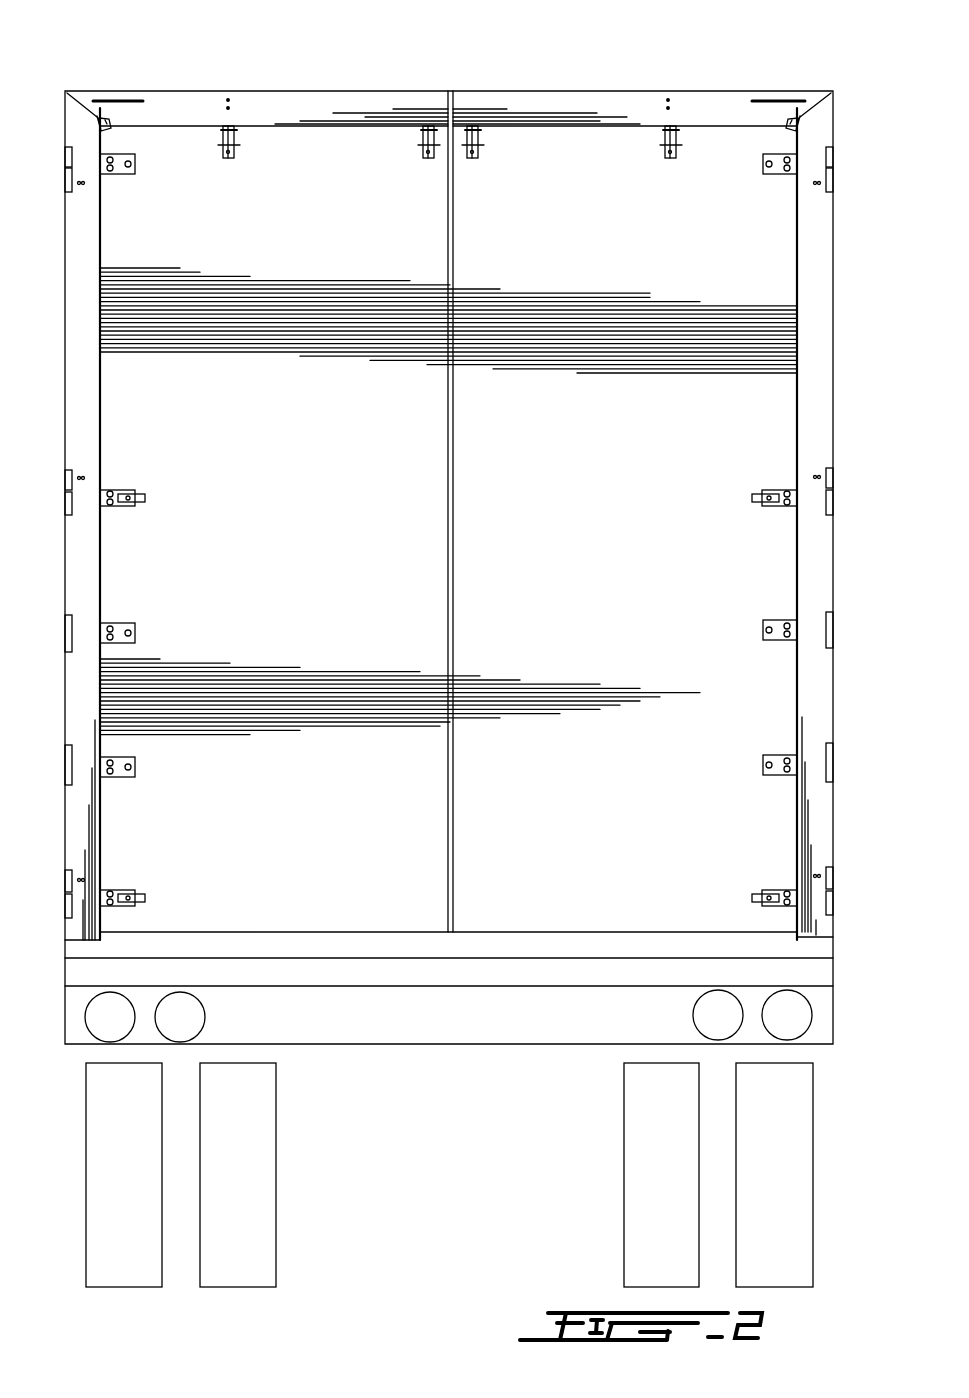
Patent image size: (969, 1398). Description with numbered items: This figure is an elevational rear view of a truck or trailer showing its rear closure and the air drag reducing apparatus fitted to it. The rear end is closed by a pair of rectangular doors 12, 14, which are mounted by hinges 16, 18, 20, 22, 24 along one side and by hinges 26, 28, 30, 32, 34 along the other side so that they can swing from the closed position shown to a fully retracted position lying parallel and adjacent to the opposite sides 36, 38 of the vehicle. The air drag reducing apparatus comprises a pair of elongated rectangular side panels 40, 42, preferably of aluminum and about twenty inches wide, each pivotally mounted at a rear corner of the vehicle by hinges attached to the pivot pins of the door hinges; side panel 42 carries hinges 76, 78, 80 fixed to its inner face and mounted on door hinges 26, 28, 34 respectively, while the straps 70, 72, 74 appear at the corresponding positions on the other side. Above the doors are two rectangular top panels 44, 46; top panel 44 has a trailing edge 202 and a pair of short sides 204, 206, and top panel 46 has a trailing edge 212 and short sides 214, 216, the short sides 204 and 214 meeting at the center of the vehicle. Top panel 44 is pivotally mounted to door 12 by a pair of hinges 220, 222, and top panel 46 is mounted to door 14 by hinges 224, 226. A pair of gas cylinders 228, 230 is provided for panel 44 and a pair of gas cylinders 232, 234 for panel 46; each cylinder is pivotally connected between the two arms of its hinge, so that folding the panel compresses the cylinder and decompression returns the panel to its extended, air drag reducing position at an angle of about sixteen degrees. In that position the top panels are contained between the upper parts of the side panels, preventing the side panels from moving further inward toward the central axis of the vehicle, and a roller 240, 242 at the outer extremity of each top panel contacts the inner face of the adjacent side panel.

The door 12 is at (182, 362).
The door 14 is at (732, 333).
The hinge 16 is at (65, 163).
The hinge 18 is at (66, 500).
The hinge 20 is at (66, 632).
The hinge 22 is at (66, 760).
The hinge 24 is at (66, 898).
The hinge 26 is at (833, 162).
The hinge 28 is at (835, 497).
The hinge 30 is at (835, 630).
The hinge 32 is at (835, 760).
The hinge 34 is at (835, 897).
The side of the vehicle 36 is at (57, 94).
The side of the vehicle 38 is at (845, 97).
The side panel 40 is at (70, 422).
The side panel 42 is at (830, 396).
The top panel 44 is at (340, 94).
The top panel 46 is at (653, 94).
The left hinge strap 70 is at (66, 183).
The left hinge strap 72 is at (66, 478).
The left hinge strap 74 is at (66, 882).
The hinge 76 is at (835, 182).
The hinge 78 is at (833, 472).
The hinge 80 is at (835, 872).
The trailing edge 202 is at (380, 123).
The short side 204 is at (446, 125).
The short side 206 is at (92, 98).
The trailing edge 212 is at (540, 125).
The short side 214 is at (455, 125).
The short side 216 is at (818, 94).
The hinge 220 is at (229, 158).
The hinge 222 is at (429, 160).
The hinge 224 is at (474, 160).
The hinge 226 is at (671, 160).
The gas cylinder 228 is at (236, 131).
The gas cylinder 230 is at (422, 129).
The gas cylinder 232 is at (479, 129).
The gas cylinder 234 is at (665, 134).
The roller 240 is at (111, 127).
The roller 242 is at (786, 127).